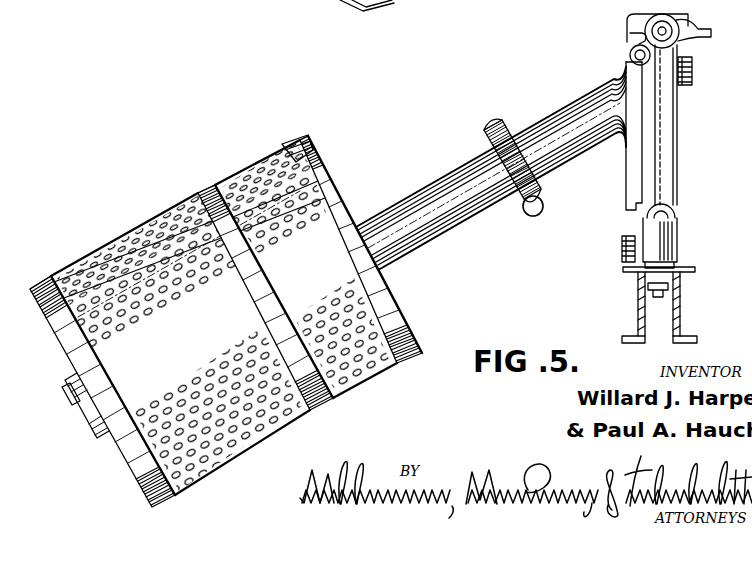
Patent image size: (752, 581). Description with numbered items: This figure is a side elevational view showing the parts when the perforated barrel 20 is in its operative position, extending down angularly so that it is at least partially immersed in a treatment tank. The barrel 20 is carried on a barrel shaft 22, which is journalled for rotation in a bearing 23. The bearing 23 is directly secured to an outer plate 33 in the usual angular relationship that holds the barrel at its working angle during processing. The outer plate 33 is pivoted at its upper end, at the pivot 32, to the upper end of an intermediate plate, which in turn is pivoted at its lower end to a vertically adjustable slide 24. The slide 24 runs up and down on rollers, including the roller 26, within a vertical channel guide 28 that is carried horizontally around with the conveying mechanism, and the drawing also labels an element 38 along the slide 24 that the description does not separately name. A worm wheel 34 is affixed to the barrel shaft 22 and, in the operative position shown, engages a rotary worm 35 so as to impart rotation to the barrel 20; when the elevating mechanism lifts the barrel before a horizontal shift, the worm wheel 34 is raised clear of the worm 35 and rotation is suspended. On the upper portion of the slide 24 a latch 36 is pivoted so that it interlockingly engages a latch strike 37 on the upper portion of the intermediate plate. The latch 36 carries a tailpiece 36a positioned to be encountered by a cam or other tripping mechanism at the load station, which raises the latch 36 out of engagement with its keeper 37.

The perforated barrel 20 is at (112, 262).
The barrel shaft 22 is at (418, 192).
The bearing 23 is at (566, 105).
The slide 24 is at (667, 136).
The roller 26 is at (672, 210).
The channel guide 28 is at (661, 14).
The pivot 32 is at (630, 55).
The outer plate 33 is at (628, 172).
The worm wheel 34 is at (513, 128).
The rotary worm 35 is at (529, 217).
The latch 36 is at (668, 22).
The tailpiece 36a is at (699, 34).
The latch strike 37 is at (630, 33).
The slot 38 is at (662, 160).